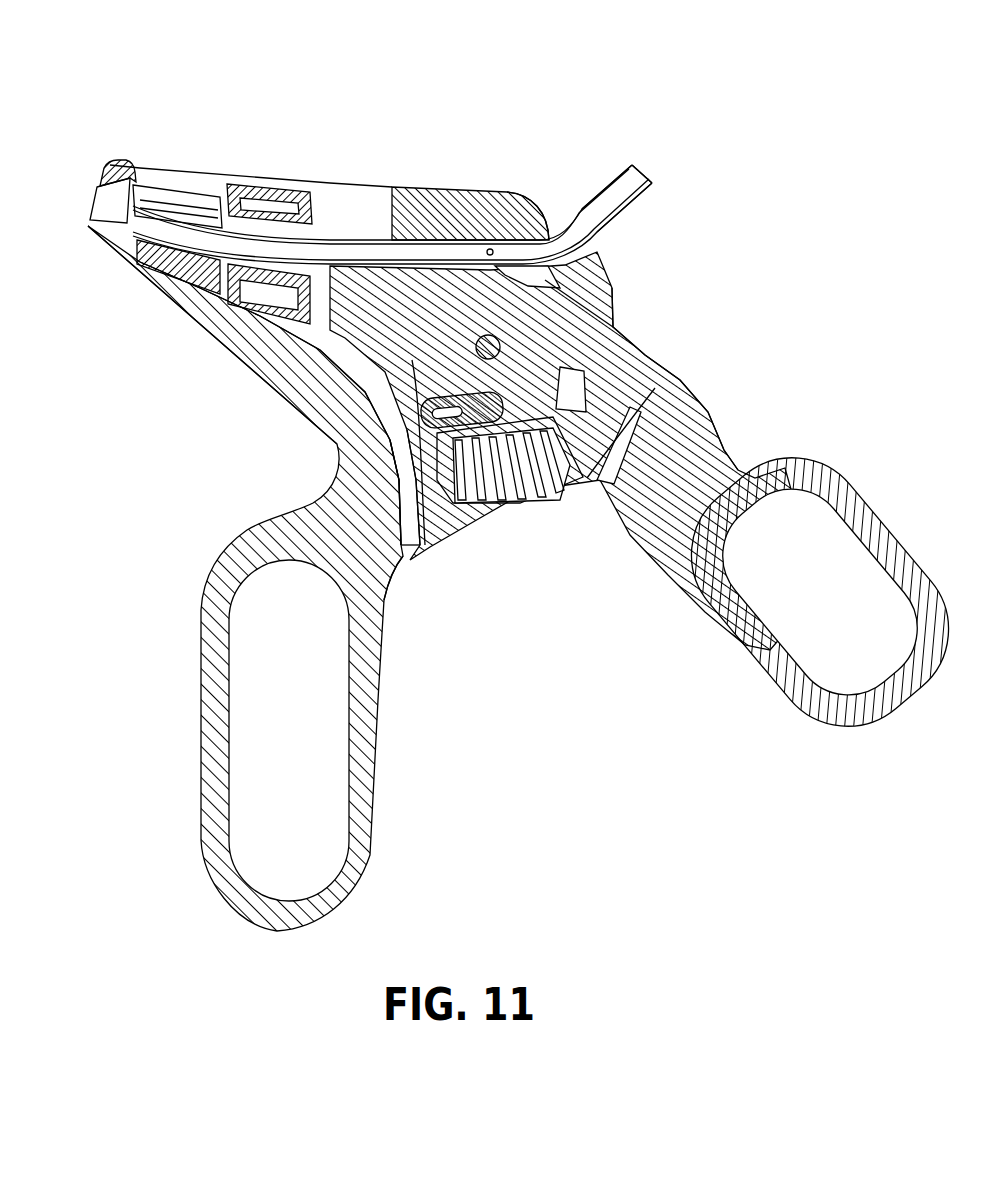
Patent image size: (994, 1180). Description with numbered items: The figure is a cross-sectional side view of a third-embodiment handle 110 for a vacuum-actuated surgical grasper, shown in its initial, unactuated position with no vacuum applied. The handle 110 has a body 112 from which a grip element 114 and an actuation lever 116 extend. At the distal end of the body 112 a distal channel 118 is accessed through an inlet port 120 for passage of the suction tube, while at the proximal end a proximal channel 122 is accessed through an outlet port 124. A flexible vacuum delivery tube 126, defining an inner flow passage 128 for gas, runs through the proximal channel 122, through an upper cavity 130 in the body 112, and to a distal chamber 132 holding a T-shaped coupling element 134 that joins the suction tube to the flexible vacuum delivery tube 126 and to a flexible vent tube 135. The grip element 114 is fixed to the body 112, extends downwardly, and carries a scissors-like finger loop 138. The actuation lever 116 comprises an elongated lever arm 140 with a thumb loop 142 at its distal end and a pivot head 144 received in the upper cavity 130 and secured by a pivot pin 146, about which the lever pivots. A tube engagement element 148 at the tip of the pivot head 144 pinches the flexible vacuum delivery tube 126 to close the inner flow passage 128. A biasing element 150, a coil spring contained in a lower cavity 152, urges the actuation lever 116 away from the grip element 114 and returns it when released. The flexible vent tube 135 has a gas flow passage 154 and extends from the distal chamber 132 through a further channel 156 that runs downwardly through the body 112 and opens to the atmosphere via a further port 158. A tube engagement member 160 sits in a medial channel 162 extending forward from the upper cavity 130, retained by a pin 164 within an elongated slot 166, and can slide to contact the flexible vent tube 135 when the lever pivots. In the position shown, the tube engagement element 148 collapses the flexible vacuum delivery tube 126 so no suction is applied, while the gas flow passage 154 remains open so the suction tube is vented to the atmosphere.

The handle 110 is at (128, 65).
The body 112 is at (407, 185).
The grip element 114 is at (139, 784).
The actuation lever 116 is at (655, 588).
The distal channel 118 is at (97, 210).
The inlet port 120 is at (82, 183).
The proximal channel 122 is at (533, 230).
The outlet port 124 is at (595, 253).
The flexible vacuum delivery tube 126 is at (620, 212).
The inner flow passage 128 is at (607, 200).
The upper cavity 130 is at (443, 367).
The distal chamber 132 is at (378, 207).
The coupling element 134 is at (267, 193).
The flexible vent tube 135 is at (332, 280).
The finger loop 138 is at (377, 845).
The lever arm 140 is at (712, 433).
The thumb loop 142 is at (768, 685).
The pivot head 144 is at (545, 305).
The pivot pin 146 is at (500, 345).
The tube engagement element 148 is at (487, 246).
The biasing element 150 is at (560, 473).
The lower cavity 152 is at (537, 490).
The gas flow passage 154 is at (413, 537).
The further channel 156 is at (395, 503).
The further port 158 is at (410, 575).
The tube engagement member 160 is at (510, 407).
The medial channel 162 is at (433, 487).
The pin 164 is at (437, 407).
The elongated slot 166 is at (433, 420).